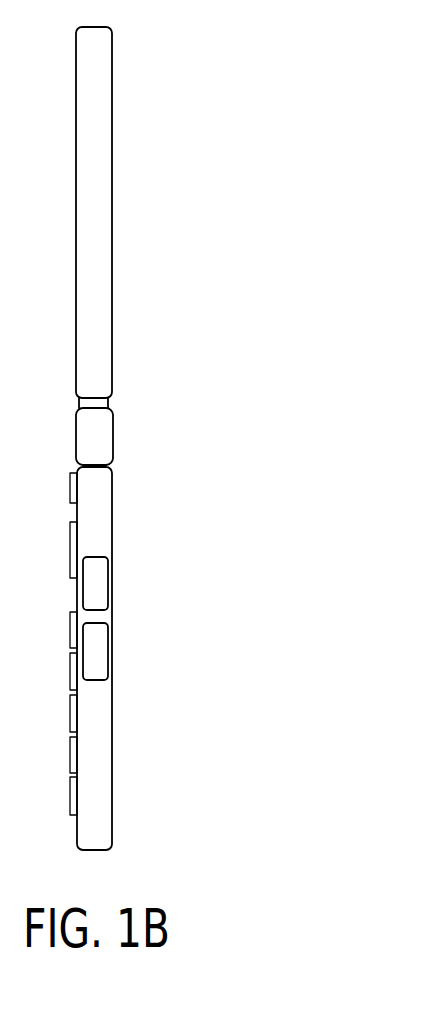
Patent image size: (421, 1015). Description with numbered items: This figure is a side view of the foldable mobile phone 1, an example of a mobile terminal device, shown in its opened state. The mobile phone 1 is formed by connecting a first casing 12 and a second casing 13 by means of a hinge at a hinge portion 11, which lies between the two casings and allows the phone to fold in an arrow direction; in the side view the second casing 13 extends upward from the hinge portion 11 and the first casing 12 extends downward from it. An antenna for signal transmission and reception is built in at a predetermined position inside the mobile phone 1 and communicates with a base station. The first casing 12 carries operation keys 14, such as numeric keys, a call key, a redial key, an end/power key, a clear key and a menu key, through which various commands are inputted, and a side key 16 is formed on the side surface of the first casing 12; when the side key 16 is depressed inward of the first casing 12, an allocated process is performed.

The mobile phone 1 is at (103, 438).
The hinge portion 11 is at (113, 437).
The first casing 12 is at (112, 535).
The second casing 13 is at (112, 220).
The operation keys 14 is at (63, 488).
The side key 16 is at (108, 582).